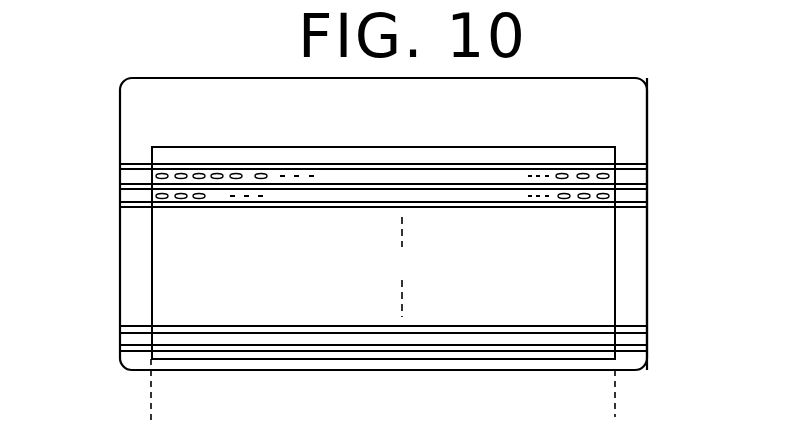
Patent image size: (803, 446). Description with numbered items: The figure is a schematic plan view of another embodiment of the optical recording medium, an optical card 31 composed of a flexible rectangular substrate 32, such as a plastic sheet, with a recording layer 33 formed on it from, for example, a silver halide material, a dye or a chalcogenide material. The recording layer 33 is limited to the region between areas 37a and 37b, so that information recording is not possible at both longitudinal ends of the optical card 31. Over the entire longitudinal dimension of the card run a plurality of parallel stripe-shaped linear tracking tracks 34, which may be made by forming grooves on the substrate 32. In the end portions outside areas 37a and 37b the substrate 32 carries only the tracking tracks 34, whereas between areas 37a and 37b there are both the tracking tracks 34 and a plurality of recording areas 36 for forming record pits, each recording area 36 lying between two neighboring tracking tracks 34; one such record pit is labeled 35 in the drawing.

The optical card 31 is at (660, 112).
The substrate 32 is at (647, 131).
The recording layer 33 is at (602, 262).
The tracking tracks 34 is at (647, 182).
The information pit 35 is at (570, 205).
The recording areas 36 is at (120, 192).
The area boundary 37a is at (153, 398).
The area boundary 37b is at (616, 390).